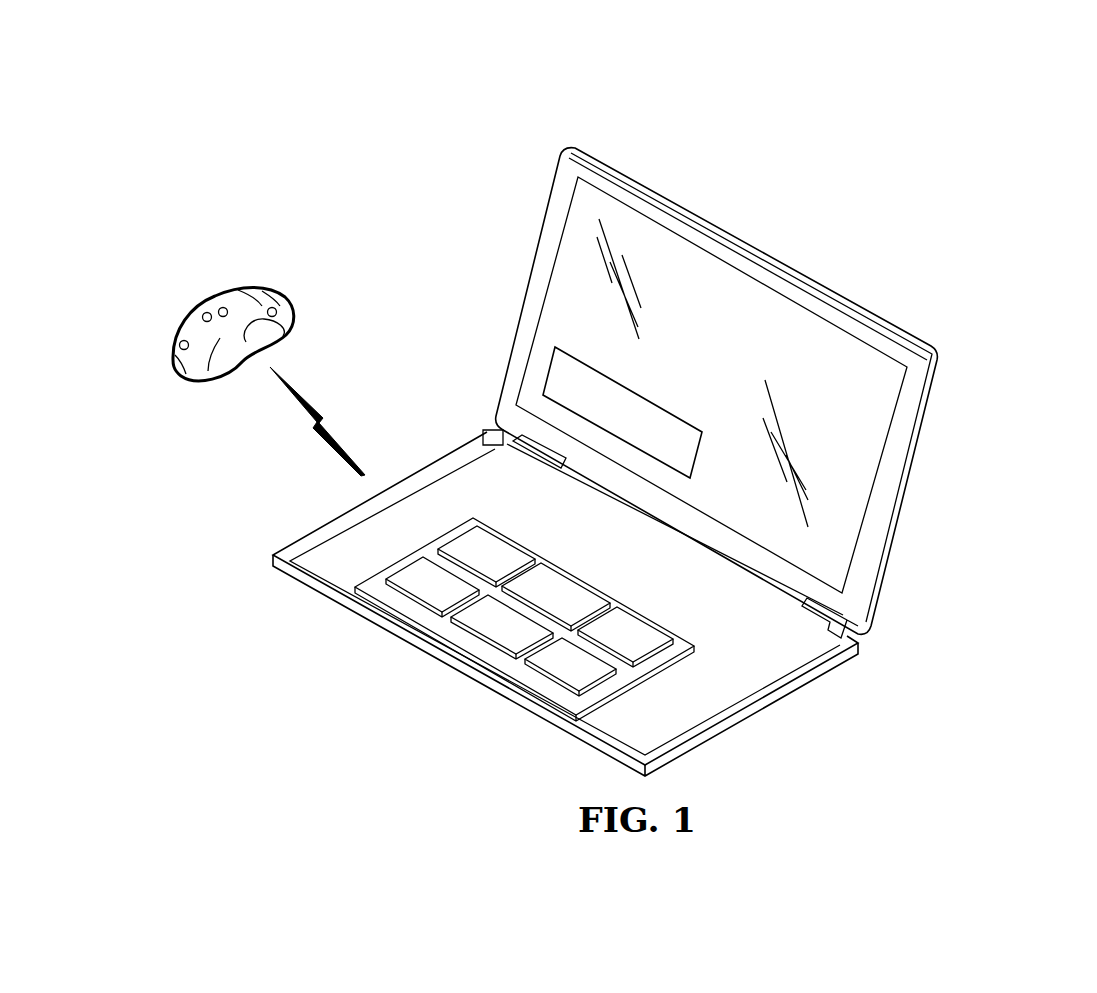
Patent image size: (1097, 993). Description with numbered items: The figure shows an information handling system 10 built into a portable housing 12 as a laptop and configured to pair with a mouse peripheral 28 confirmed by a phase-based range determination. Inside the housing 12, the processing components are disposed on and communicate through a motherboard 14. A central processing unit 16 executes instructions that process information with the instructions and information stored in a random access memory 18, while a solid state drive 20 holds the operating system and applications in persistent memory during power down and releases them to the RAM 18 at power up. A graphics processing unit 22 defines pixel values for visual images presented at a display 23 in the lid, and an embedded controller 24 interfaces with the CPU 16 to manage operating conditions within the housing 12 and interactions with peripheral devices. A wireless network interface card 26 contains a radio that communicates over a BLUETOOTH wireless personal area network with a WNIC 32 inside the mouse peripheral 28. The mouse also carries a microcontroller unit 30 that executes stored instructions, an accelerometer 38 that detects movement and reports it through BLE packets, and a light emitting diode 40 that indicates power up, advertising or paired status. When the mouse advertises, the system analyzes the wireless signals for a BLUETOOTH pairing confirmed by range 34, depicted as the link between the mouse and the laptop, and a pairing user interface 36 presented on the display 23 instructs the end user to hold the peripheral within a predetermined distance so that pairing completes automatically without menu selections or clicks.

The information handling system 10 is at (782, 130).
The portable housing 12 is at (432, 462).
The motherboard 14 is at (520, 668).
The central processing unit 16 is at (456, 548).
The random access memory 18 is at (403, 577).
The solid state drive 20 is at (598, 674).
The graphics processing unit 22 is at (540, 577).
The display 23 is at (730, 287).
The embedded controller 24 is at (650, 639).
The wireless network interface card 26 is at (470, 617).
The mouse peripheral 28 is at (127, 224).
The microcontroller unit 30 is at (177, 332).
The wireless network interface card 32 is at (205, 306).
The BLUETOOTH pairing confirmed by range 34 is at (252, 444).
The pairing user interface 36 is at (546, 372).
The accelerometer 38 is at (232, 300).
The light emitting diode 40 is at (280, 303).